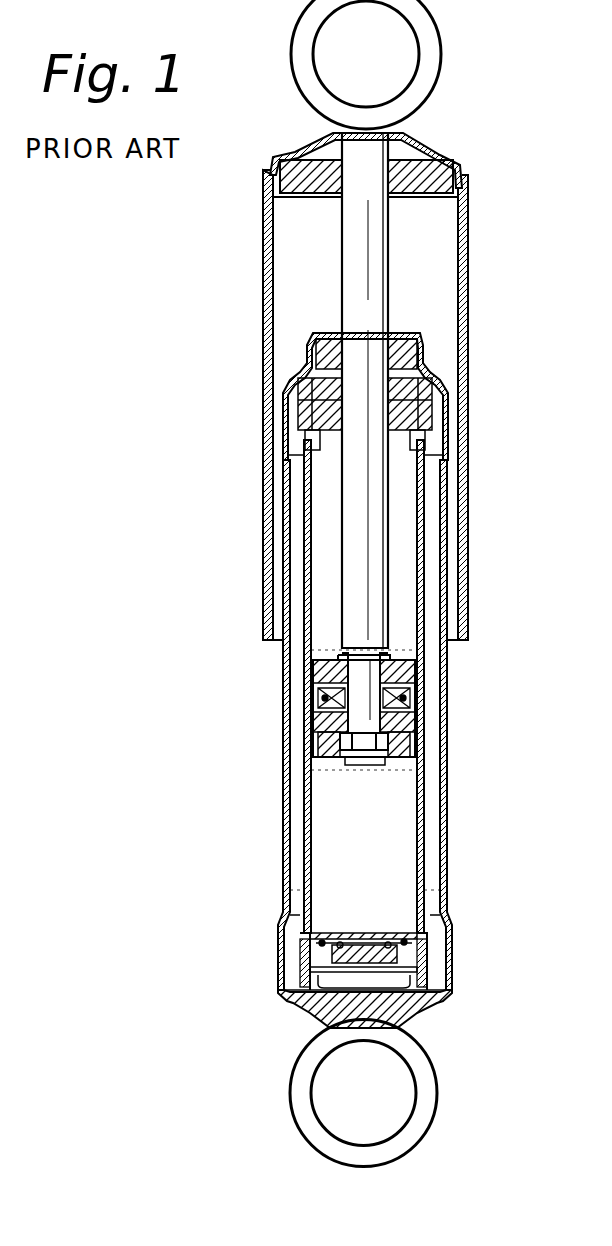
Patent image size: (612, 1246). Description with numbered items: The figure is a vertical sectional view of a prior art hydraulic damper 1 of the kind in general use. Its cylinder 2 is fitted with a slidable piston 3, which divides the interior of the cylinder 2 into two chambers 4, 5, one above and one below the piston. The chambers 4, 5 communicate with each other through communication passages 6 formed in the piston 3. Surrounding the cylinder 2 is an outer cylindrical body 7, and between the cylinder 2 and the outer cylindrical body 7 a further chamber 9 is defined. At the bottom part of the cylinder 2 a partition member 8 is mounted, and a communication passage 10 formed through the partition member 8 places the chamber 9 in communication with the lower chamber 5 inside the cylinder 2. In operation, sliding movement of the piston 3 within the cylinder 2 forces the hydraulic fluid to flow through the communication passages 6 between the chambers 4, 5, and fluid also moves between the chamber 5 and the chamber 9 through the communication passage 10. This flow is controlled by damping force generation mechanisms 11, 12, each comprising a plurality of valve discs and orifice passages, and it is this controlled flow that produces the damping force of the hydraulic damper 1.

The hydraulic damper 1 is at (476, 159).
The cylinder 2 is at (422, 798).
The piston 3 is at (402, 757).
The chamber 4 is at (407, 592).
The chamber 5 is at (400, 860).
The communication passages 6 is at (413, 683).
The outer cylindrical body 7 is at (447, 823).
The partition member 8 is at (320, 944).
The chamber 9 is at (430, 893).
The communication passage 10 is at (427, 940).
The damping force generation mechanism 11 is at (418, 698).
The damping force generation mechanism 12 is at (438, 976).